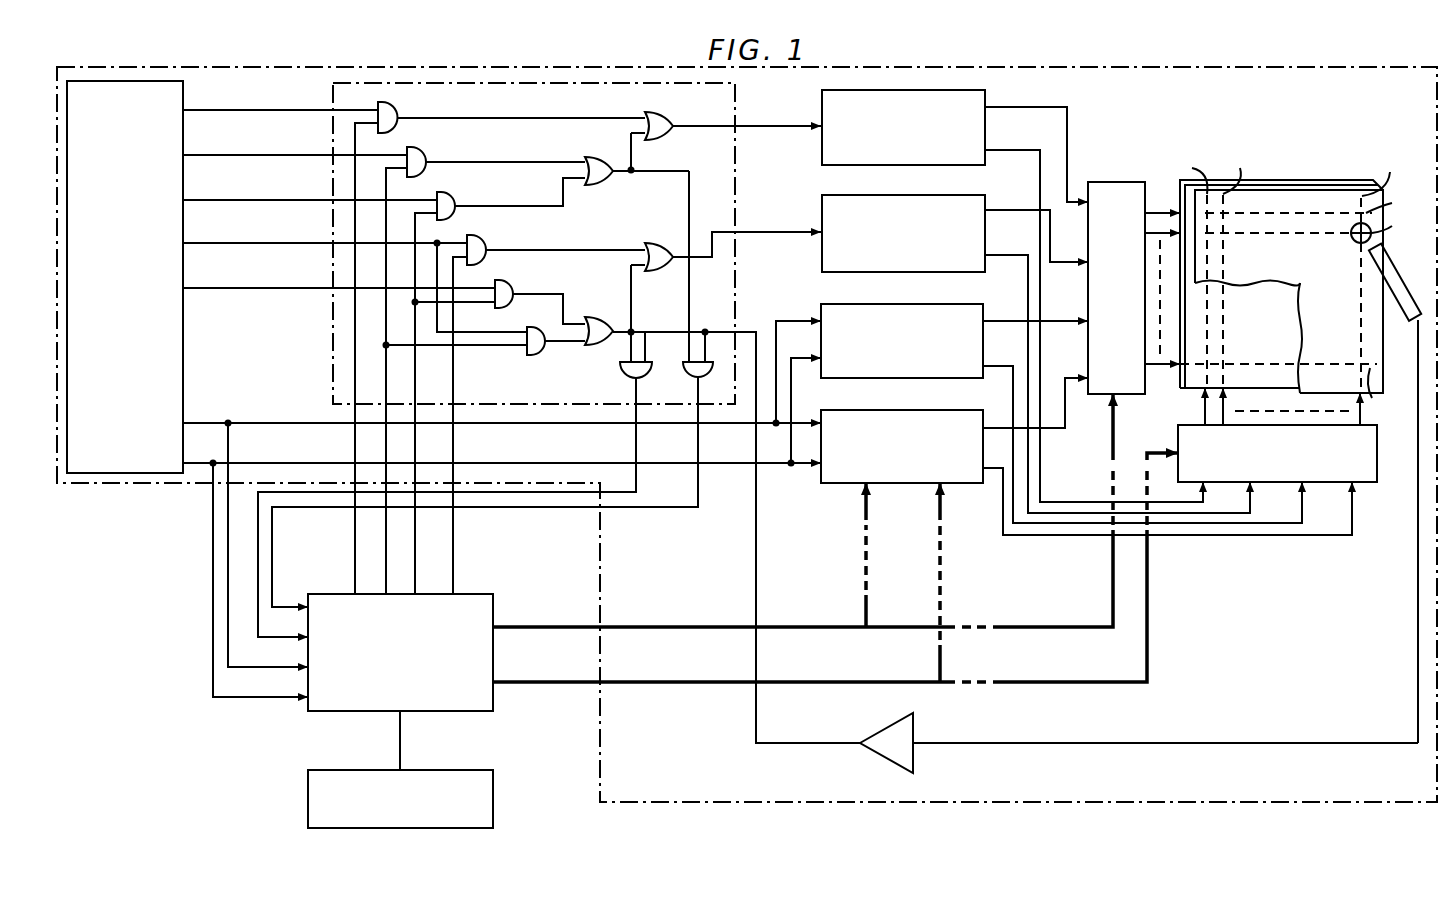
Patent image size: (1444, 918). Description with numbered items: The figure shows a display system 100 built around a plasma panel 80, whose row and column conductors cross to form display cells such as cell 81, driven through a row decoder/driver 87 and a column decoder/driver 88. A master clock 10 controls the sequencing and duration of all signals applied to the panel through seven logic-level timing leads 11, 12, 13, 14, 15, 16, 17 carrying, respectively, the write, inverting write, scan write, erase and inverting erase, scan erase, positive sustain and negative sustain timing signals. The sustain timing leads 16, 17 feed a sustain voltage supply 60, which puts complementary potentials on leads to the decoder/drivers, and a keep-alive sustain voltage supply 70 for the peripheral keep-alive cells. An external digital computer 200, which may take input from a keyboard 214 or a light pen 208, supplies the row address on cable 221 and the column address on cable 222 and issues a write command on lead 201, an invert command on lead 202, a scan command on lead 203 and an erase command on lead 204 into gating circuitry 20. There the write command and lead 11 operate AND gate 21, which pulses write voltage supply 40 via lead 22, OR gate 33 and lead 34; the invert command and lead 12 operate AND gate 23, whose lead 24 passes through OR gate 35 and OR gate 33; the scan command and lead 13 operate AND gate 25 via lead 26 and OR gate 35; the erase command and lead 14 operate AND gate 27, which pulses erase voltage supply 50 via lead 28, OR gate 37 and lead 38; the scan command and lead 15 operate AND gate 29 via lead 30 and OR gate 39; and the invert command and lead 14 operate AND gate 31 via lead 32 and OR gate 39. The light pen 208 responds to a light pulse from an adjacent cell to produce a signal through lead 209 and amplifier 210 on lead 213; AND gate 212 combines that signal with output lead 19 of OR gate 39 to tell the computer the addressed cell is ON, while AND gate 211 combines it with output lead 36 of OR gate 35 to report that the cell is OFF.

The master clock 10 is at (183, 340).
The write timing lead 11 is at (299, 110).
The inverting write timing lead 12 is at (312, 154).
The scan write timing lead 13 is at (316, 199).
The erase and inverting erase timing lead 14 is at (320, 242).
The scan erase timing lead 15 is at (319, 287).
The positive sustain timing lead 16 is at (320, 421).
The negative sustain timing lead 17 is at (193, 461).
The output lead of OR gate 39 19 is at (627, 347).
The gating circuitry 20 is at (735, 98).
The AND gate 21 is at (391, 107).
The lead 22 is at (450, 117).
The AND gate 23 is at (421, 158).
The lead 24 is at (468, 161).
The AND gate 25 is at (450, 201).
The lead 26 is at (490, 205).
The AND gate 27 is at (478, 247).
The lead 28 is at (512, 249).
The AND gate 29 is at (505, 290).
The lead 30 is at (550, 293).
The AND gate 31 is at (538, 333).
The lead 32 is at (565, 345).
The OR gate 33 is at (660, 103).
The lead 34 is at (711, 125).
The OR gate 35 is at (606, 182).
The output lead of OR gate 35 36 is at (690, 180).
The OR gate 37 is at (657, 244).
The lead 38 is at (680, 265).
The OR gate 39 is at (600, 317).
The write voltage supply 40 is at (822, 160).
The erase voltage supply 50 is at (822, 258).
The sustain voltage supply 60 is at (821, 309).
The keep-alive sustain voltage supply 70 is at (821, 483).
The plasma panel 80 is at (1298, 180).
The cell 81 is at (1353, 226).
The row decoder/driver 87 is at (1112, 182).
The column decoder/driver 88 is at (1377, 472).
The display system 100 is at (92, 484).
The digital computer 200 is at (460, 712).
The write command lead 201 is at (358, 514).
The invert command lead 202 is at (386, 521).
The scan command lead 203 is at (417, 516).
The erase command lead 204 is at (455, 512).
The light pen 208 is at (1388, 265).
The light pen output lead 209 is at (979, 743).
The amplifier 210 is at (899, 728).
The AND gate 211 is at (694, 372).
The AND gate 212 is at (630, 372).
The lead 213 is at (818, 743).
The keyboard 214 is at (493, 806).
The row address cable 221 is at (630, 627).
The column address cable 222 is at (630, 682).